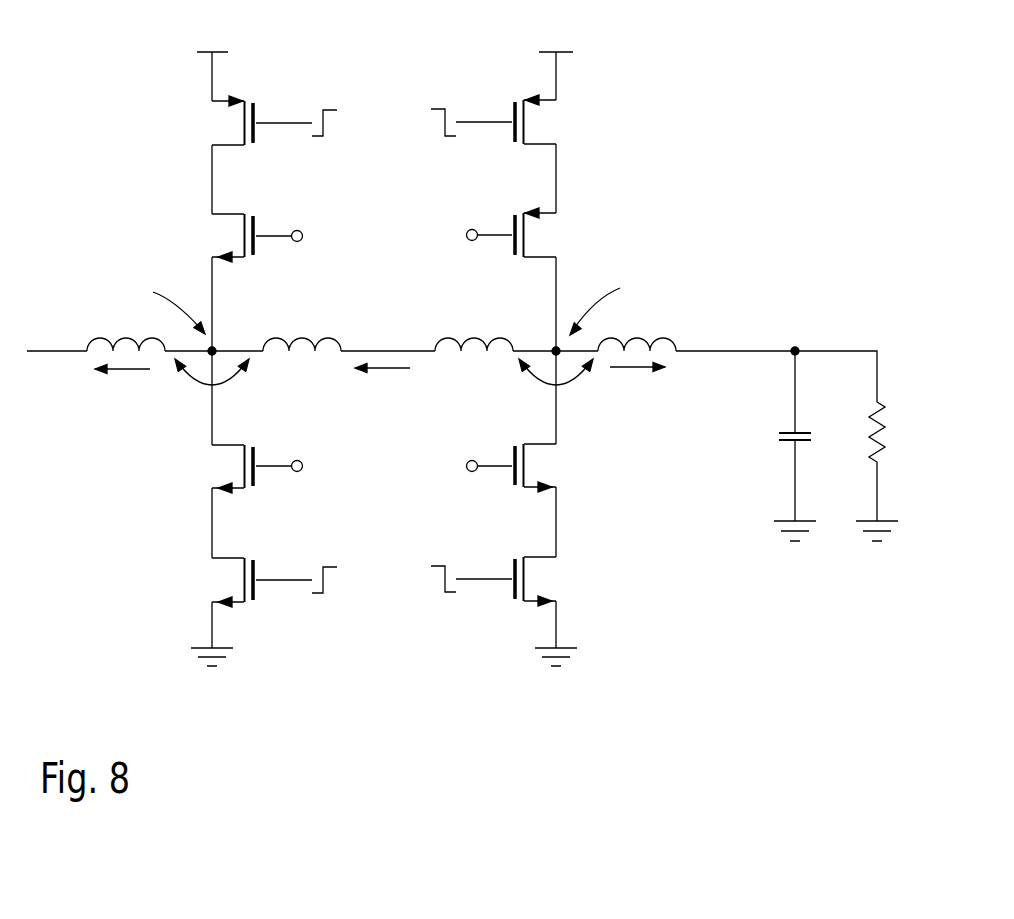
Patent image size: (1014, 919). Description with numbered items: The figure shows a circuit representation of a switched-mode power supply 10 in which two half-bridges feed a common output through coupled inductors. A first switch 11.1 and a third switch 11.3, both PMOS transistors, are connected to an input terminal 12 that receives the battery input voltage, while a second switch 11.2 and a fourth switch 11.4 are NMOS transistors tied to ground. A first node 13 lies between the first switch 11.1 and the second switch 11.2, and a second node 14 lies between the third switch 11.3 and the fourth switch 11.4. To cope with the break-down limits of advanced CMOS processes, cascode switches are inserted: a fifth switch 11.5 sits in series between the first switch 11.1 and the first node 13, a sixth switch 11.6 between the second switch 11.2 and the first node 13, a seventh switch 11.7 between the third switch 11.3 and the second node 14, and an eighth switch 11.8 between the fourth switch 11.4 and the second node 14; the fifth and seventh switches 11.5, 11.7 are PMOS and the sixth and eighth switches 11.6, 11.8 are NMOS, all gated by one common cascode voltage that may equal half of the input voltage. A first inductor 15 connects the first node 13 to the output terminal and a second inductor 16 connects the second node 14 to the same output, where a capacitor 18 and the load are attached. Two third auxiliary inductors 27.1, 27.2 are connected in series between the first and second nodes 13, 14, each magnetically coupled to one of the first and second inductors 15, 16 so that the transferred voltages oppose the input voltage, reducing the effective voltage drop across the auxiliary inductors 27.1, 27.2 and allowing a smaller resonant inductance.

The switched-mode power supply 10 is at (735, 210).
The first switch 11.1 is at (592, 103).
The second switch 11.2 is at (606, 588).
The third switch 11.3 is at (155, 115).
The fourth switch 11.4 is at (155, 578).
The fifth switch 11.5 is at (592, 210).
The sixth switch 11.6 is at (606, 476).
The seventh switch 11.7 is at (272, 218).
The eighth switch 11.8 is at (275, 488).
The input terminal 12 is at (575, 50).
The first node 13 is at (557, 354).
The second node 14 is at (211, 354).
The first inductor 15 is at (665, 337).
The second inductor 16 is at (98, 338).
The capacitor 18 is at (785, 431).
The third auxiliary inductor 27.1 is at (450, 337).
The third auxiliary inductor 27.2 is at (327, 337).